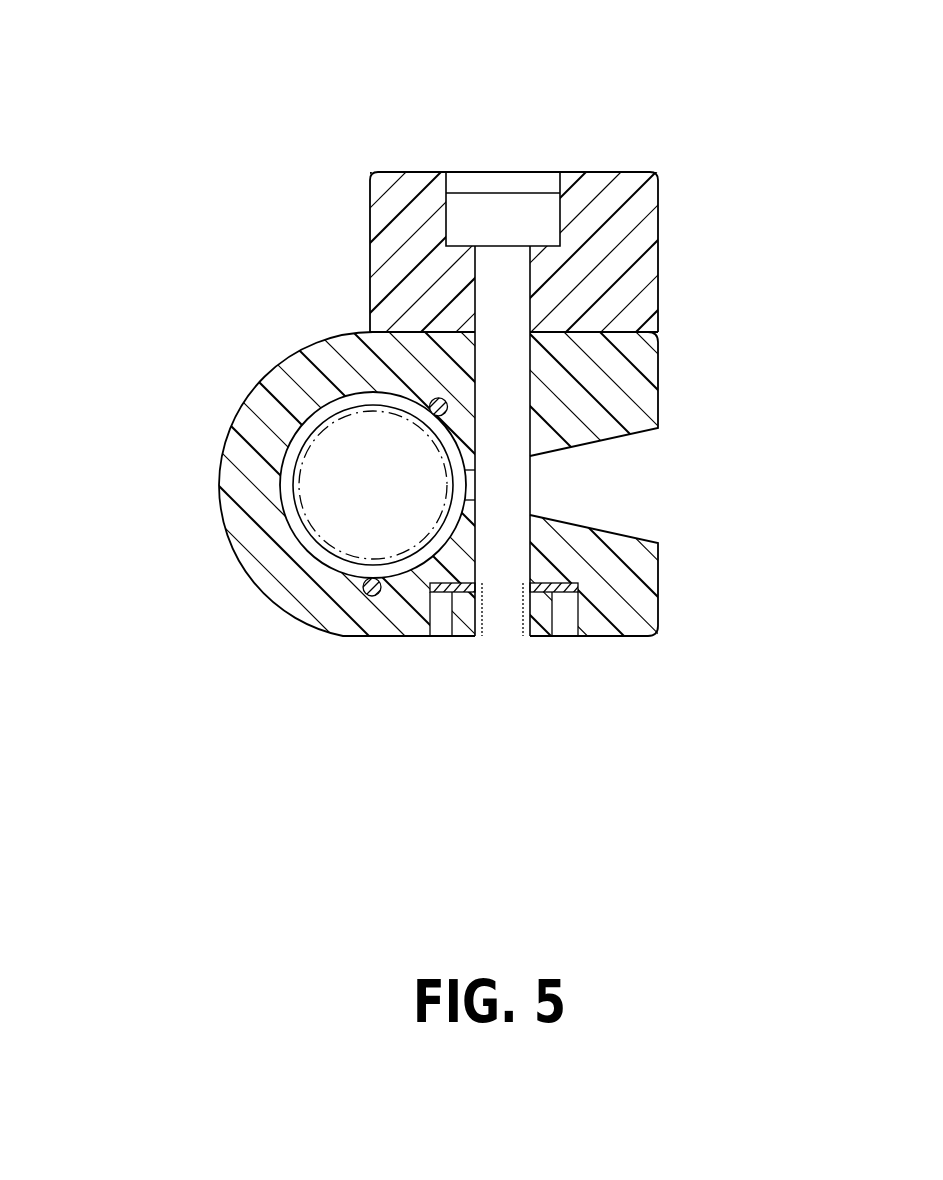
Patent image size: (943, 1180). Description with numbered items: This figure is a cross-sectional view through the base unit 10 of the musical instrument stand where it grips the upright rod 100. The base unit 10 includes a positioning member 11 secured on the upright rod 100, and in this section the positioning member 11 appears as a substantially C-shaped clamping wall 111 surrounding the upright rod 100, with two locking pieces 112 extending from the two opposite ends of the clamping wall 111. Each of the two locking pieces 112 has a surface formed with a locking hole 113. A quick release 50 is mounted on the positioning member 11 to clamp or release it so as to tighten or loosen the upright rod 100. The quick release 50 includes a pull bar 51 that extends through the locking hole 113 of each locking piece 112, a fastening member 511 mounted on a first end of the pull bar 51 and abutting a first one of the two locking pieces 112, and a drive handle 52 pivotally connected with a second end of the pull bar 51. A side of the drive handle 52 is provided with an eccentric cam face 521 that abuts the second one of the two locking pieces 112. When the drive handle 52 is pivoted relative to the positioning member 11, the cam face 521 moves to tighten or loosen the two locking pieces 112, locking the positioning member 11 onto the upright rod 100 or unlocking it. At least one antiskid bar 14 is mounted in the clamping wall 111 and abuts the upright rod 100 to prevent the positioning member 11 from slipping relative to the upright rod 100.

The base unit 10 is at (471, 516).
The positioning member 11 is at (232, 545).
The clamping wall 111 is at (270, 578).
The locking pieces 112 is at (647, 392).
The locking hole 113 is at (530, 387).
The antiskid bar 14 is at (364, 595).
The upright rod 100 is at (290, 388).
The quick release 50 is at (503, 405).
The pull bar 51 is at (522, 485).
The fastening member 511 is at (548, 613).
The drive handle 52 is at (503, 196).
The cam face 521 is at (407, 320).